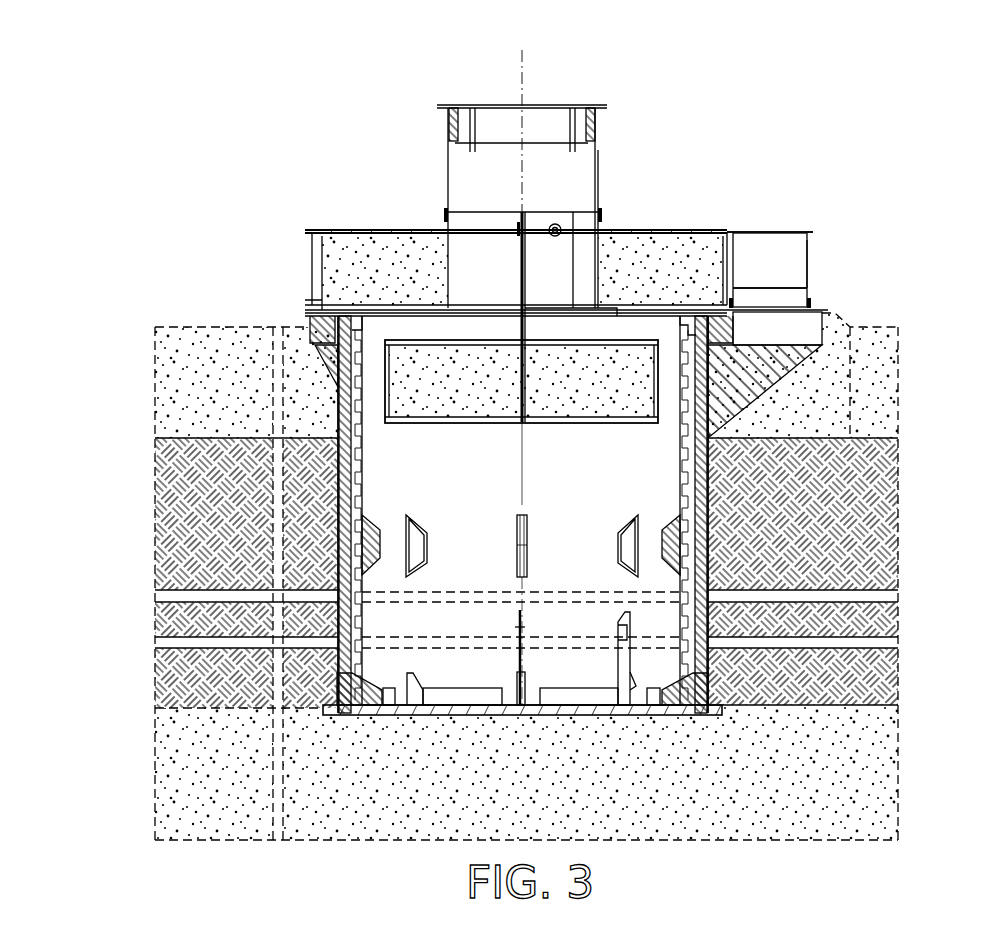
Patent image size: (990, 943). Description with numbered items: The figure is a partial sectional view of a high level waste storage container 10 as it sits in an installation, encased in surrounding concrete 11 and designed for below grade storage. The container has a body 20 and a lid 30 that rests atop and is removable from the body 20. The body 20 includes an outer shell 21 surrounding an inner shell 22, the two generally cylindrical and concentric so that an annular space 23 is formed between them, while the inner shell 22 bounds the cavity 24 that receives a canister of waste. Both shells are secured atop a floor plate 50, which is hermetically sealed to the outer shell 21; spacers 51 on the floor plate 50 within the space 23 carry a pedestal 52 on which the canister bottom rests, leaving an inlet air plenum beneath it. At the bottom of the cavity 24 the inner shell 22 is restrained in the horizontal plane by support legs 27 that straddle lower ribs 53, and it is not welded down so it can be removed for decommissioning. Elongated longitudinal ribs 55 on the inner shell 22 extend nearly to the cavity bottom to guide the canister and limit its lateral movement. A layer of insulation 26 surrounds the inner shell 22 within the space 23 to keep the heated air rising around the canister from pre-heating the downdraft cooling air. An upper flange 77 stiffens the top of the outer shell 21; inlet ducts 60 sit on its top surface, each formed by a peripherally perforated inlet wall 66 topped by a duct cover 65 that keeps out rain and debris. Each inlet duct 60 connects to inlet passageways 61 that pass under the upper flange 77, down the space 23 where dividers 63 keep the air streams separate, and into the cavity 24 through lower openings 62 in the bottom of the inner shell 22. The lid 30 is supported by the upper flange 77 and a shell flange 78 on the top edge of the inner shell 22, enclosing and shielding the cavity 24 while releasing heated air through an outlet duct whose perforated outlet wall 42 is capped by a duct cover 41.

The HLW storage container 10 is at (543, 466).
The surrounding concrete 11 is at (893, 611).
The body 20 is at (306, 305).
The outer shell 21 is at (529, 515).
The inner shell 22 is at (690, 474).
The space 23 is at (698, 553).
The cavity 24 is at (642, 476).
The insulation 26 is at (688, 502).
The support legs 27 is at (415, 697).
The lid 30 is at (313, 230).
The duct cover 41 is at (554, 102).
The outlet wall 42 is at (598, 180).
The floor plate 50 is at (628, 632).
The spacers 51 is at (600, 705).
The pedestal 52 is at (560, 705).
The lower ribs 53 is at (383, 705).
The ribs 55 is at (375, 545).
The inlet ducts 60 is at (812, 243).
The inlet passageways 61 is at (785, 330).
The lower openings 62 is at (500, 698).
The dividers 63 is at (345, 393).
The duct cover 65 is at (795, 226).
The inlet wall 66 is at (810, 268).
The upper flange 77 is at (830, 312).
The shell flange 78 is at (697, 318).